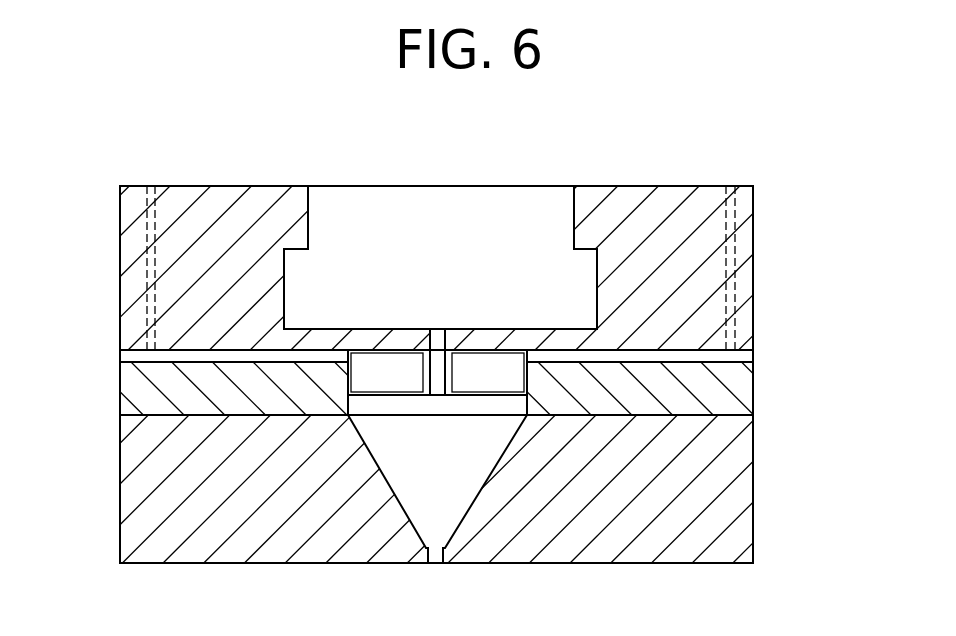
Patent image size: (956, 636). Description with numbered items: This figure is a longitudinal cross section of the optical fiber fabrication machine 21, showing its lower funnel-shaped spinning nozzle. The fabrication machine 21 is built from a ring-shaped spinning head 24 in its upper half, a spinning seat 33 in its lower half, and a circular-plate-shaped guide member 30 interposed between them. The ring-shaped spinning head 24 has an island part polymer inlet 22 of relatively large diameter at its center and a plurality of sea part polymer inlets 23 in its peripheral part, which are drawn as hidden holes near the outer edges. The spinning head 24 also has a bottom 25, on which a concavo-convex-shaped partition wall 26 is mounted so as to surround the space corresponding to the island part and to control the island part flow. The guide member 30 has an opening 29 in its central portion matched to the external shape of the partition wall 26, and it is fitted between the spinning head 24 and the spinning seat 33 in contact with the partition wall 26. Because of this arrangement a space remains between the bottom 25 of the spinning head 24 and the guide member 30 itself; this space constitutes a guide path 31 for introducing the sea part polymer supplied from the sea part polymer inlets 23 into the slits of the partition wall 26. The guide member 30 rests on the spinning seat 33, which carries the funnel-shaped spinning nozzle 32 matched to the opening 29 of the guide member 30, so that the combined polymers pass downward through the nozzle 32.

The fabrication machine 21 is at (775, 423).
The island part polymer inlet 22 is at (557, 196).
The sea part polymer inlets 23 is at (173, 224).
The ring-shaped spinning head 24 is at (297, 170).
The bottom 25 is at (366, 338).
The partition wall 26 is at (402, 410).
The opening 29 is at (526, 410).
The guide member 30 is at (157, 407).
The guide path 31 is at (167, 355).
The funnel-shaped spinning nozzle 32 is at (472, 497).
The spinning seat 33 is at (636, 545).